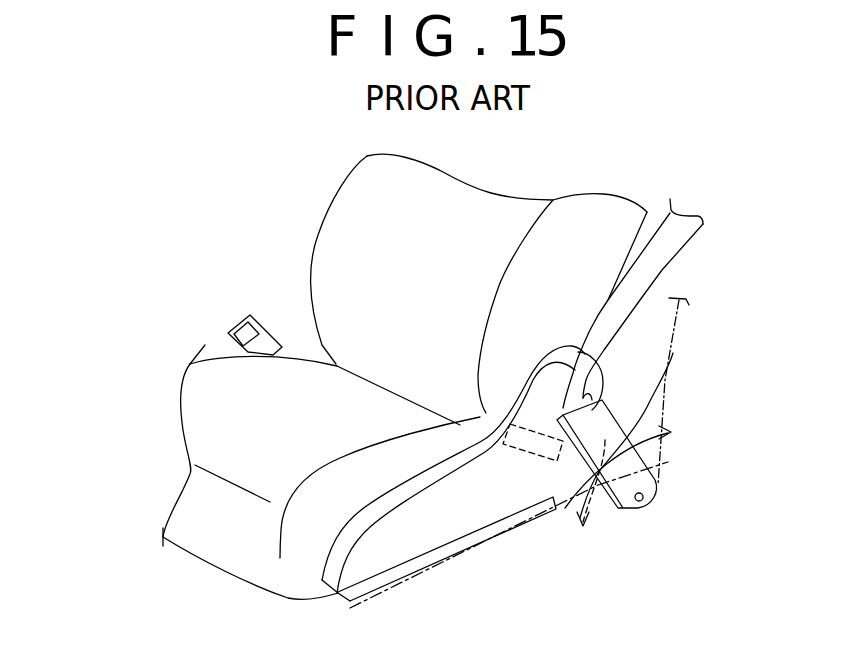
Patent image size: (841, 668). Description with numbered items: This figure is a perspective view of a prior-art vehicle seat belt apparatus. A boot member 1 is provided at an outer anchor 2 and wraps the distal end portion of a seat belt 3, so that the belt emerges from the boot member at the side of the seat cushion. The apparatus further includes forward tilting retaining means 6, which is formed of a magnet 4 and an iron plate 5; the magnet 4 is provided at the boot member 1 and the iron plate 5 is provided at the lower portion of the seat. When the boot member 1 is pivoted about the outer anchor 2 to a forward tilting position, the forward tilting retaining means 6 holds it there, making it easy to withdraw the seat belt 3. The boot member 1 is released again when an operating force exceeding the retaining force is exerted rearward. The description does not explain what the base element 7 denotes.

The boot member 1 is at (673, 353).
The outer anchor 2 is at (643, 498).
The seat belt 3 is at (667, 246).
The magnet 4 is at (587, 402).
The iron plate 5 is at (533, 456).
The forward tilting retaining means 6 is at (551, 514).
The base 7 is at (390, 552).